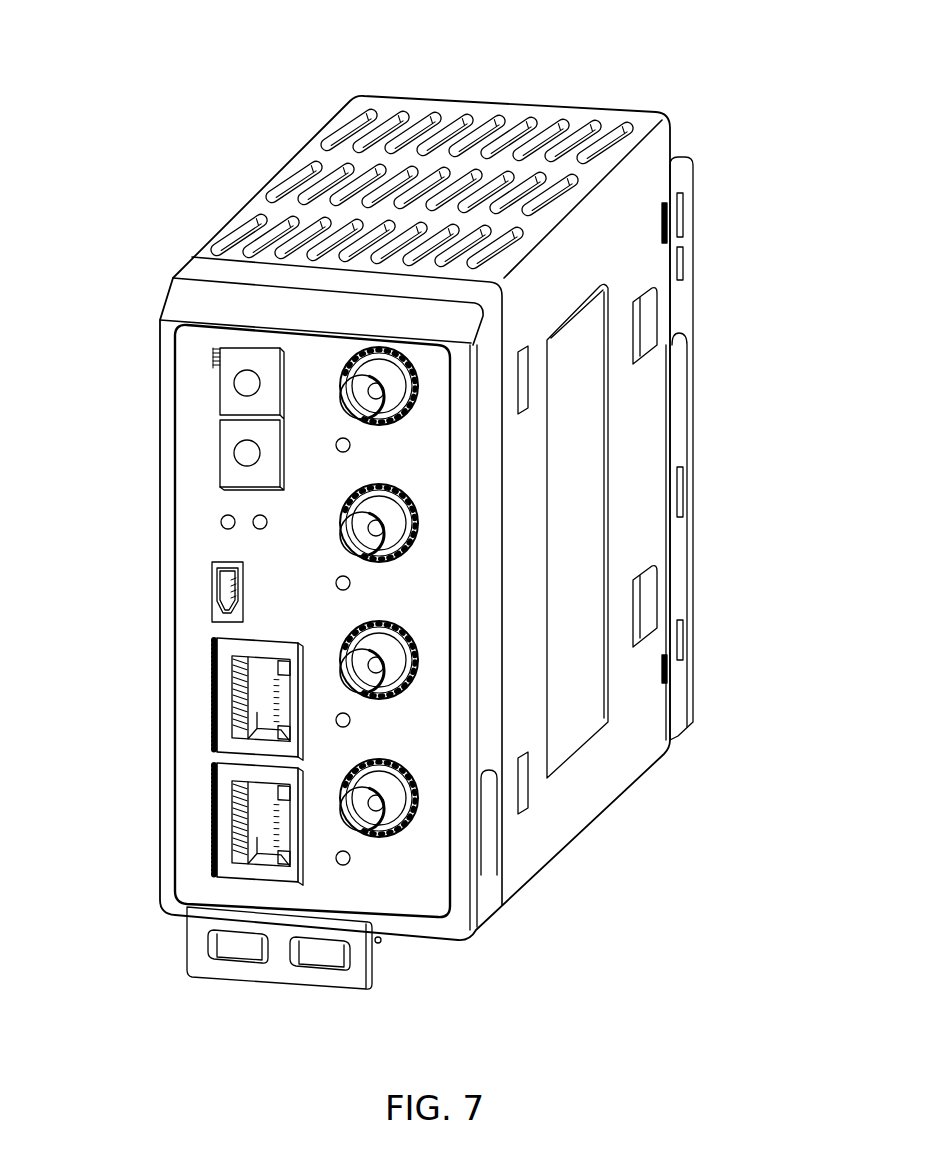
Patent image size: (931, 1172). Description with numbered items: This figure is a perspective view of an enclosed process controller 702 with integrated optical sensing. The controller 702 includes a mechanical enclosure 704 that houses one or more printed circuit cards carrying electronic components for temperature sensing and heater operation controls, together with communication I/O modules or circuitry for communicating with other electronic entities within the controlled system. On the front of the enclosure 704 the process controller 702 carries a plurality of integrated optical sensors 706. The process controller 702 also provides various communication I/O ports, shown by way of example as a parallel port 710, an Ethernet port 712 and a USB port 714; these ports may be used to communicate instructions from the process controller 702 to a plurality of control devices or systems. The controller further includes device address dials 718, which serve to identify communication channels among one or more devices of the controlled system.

The enclosed process controller 702 is at (578, 55).
The mechanical enclosure 704 is at (665, 132).
The integrated optical sensors 706 is at (367, 370).
The parallel port 710 is at (688, 380).
The Ethernet port 712 is at (223, 673).
The USB port 714 is at (213, 600).
The device address dials 718 is at (227, 382).